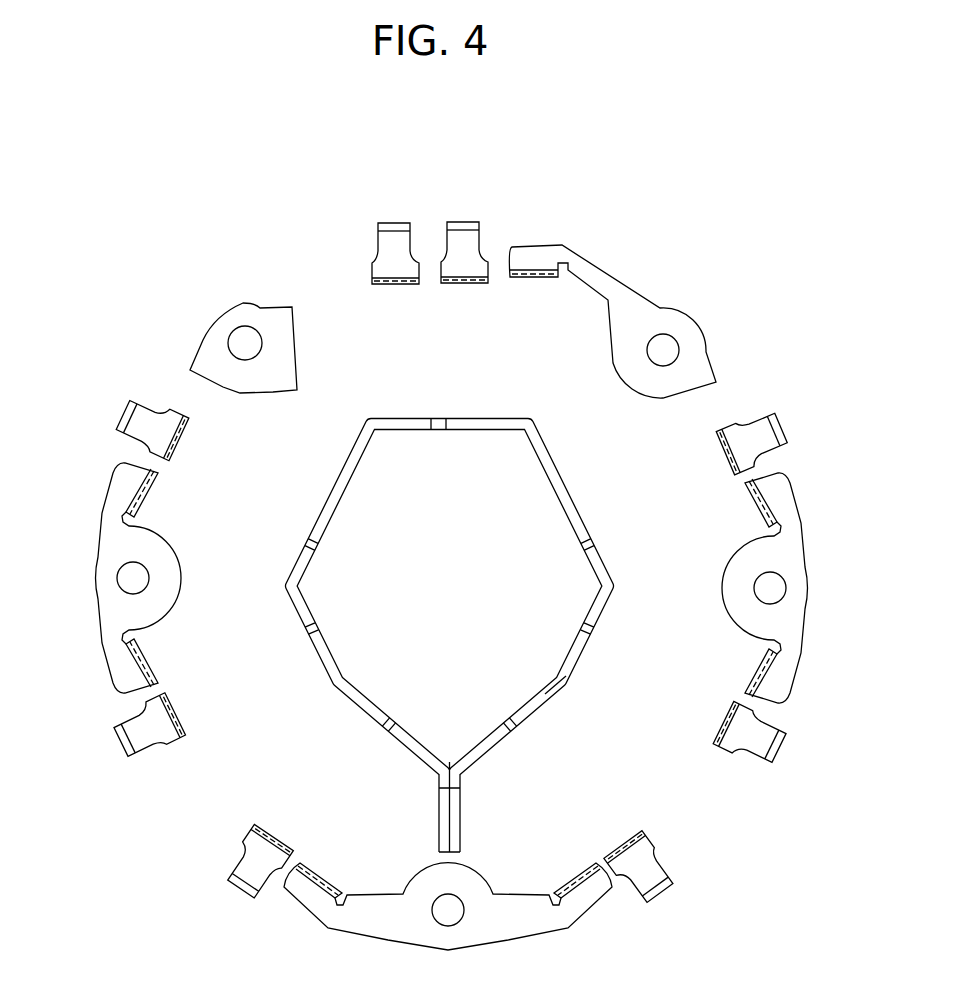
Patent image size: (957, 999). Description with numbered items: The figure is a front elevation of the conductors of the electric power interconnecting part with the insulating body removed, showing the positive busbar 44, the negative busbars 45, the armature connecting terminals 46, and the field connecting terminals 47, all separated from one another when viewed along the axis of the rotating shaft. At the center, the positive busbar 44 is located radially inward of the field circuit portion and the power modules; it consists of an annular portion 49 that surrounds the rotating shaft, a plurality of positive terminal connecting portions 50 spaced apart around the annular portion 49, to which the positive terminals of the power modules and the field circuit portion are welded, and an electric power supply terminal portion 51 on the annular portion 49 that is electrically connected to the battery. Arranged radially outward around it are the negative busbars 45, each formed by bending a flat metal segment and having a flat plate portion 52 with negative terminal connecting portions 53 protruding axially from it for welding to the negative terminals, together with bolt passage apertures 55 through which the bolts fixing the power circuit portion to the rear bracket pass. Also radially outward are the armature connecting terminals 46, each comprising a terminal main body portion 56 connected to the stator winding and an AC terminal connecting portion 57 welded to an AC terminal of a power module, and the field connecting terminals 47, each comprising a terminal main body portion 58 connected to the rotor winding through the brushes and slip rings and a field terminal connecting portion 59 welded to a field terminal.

The positive busbar 44 is at (556, 487).
The negative busbar 45 is at (449, 606).
The armature connecting terminal 46 is at (454, 658).
The field connecting terminal 47 is at (427, 224).
The annular portion 49 is at (553, 693).
The positive terminal connecting portion 50 is at (436, 428).
The electric power supply terminal portion 51 is at (460, 822).
The flat plate portion 52 is at (97, 618).
The negative terminal connecting portion 53 is at (150, 497).
The bolt passage aperture 55 is at (133, 578).
The terminal main body portion 56 is at (150, 425).
The AC terminal connecting portion 57 is at (180, 437).
The terminal main body portion 58 is at (383, 262).
The field terminal connecting portion 59 is at (392, 285).